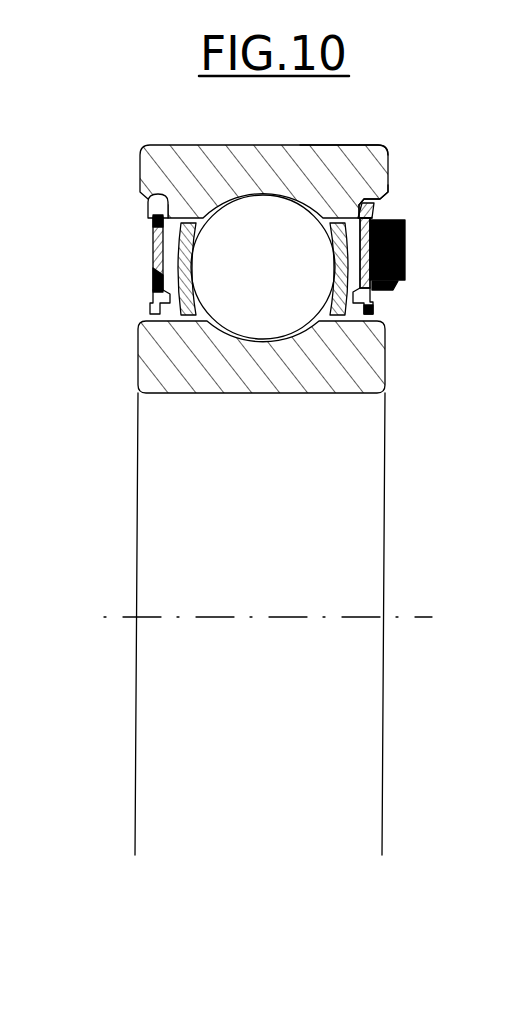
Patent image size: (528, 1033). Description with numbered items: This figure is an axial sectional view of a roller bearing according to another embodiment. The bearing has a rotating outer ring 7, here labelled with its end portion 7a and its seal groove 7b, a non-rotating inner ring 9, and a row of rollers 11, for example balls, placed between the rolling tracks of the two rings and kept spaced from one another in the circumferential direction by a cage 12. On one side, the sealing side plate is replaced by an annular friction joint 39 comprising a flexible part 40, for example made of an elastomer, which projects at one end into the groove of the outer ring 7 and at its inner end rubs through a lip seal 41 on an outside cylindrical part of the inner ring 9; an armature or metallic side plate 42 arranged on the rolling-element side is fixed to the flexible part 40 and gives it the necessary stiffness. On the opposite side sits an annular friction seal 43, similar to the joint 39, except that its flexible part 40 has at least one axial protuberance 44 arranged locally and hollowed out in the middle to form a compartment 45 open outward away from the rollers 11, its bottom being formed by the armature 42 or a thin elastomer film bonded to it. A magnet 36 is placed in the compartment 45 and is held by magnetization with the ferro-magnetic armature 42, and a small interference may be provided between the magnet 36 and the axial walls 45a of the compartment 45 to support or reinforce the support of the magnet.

The outer ring 7 is at (183, 177).
The outer ring end portion 7a is at (350, 146).
The outer ring seal groove 7b is at (386, 196).
The inner ring 9 is at (368, 370).
The rollers 11 is at (193, 227).
The cage 12 is at (240, 253).
The annular friction joint 39 is at (138, 267).
The flexible part 40 is at (153, 281).
The lip seal 41 is at (150, 310).
The armature 42 is at (150, 292).
The annular friction seal 43 is at (408, 211).
The axial protuberance 44 is at (375, 205).
The magnet 36 is at (405, 242).
The compartment 45 is at (405, 258).
The axial walls 45a is at (405, 279).